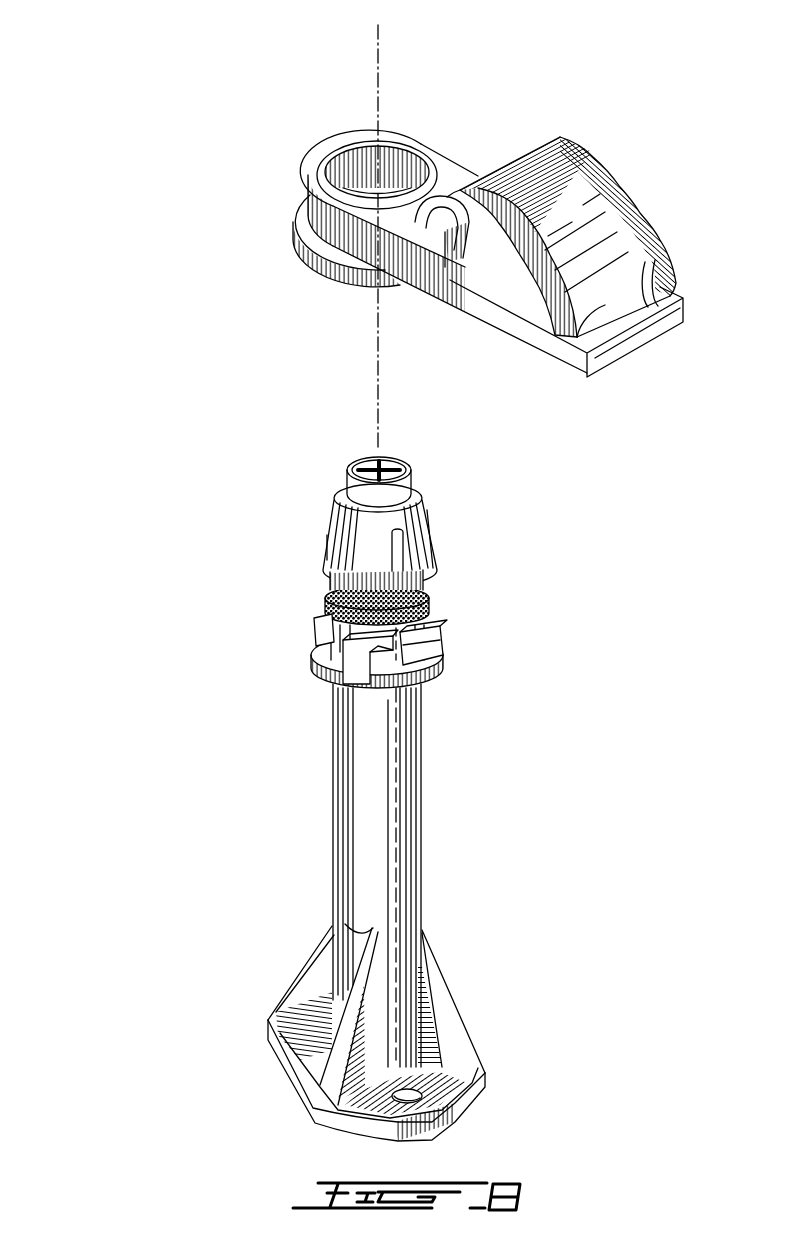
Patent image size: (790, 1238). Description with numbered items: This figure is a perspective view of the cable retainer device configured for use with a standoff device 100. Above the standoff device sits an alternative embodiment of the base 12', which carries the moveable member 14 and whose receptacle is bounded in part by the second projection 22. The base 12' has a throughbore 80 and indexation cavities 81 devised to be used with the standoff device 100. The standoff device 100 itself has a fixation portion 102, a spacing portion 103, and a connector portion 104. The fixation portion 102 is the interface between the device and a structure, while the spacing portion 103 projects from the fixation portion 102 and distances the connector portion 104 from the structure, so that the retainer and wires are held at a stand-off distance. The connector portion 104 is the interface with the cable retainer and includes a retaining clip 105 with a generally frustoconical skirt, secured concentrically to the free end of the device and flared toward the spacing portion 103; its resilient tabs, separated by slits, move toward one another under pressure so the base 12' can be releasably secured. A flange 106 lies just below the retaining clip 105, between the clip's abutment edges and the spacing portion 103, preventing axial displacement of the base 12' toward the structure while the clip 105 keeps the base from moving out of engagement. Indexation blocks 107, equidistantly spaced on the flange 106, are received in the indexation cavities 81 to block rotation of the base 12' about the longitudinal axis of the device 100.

The base 12' is at (381, 215).
The moveable member 14 is at (630, 168).
The second projection 22 is at (477, 268).
The throughbore 80 is at (400, 168).
The indexation cavities 81 is at (367, 185).
The standoff device 100 is at (190, 732).
The fixation portion 102 is at (275, 972).
The spacing portion 103 is at (315, 783).
The connector portion 104 is at (286, 570).
The retaining clip 105 is at (432, 525).
The flange 106 is at (313, 658).
The indexation blocks 107 is at (442, 653).